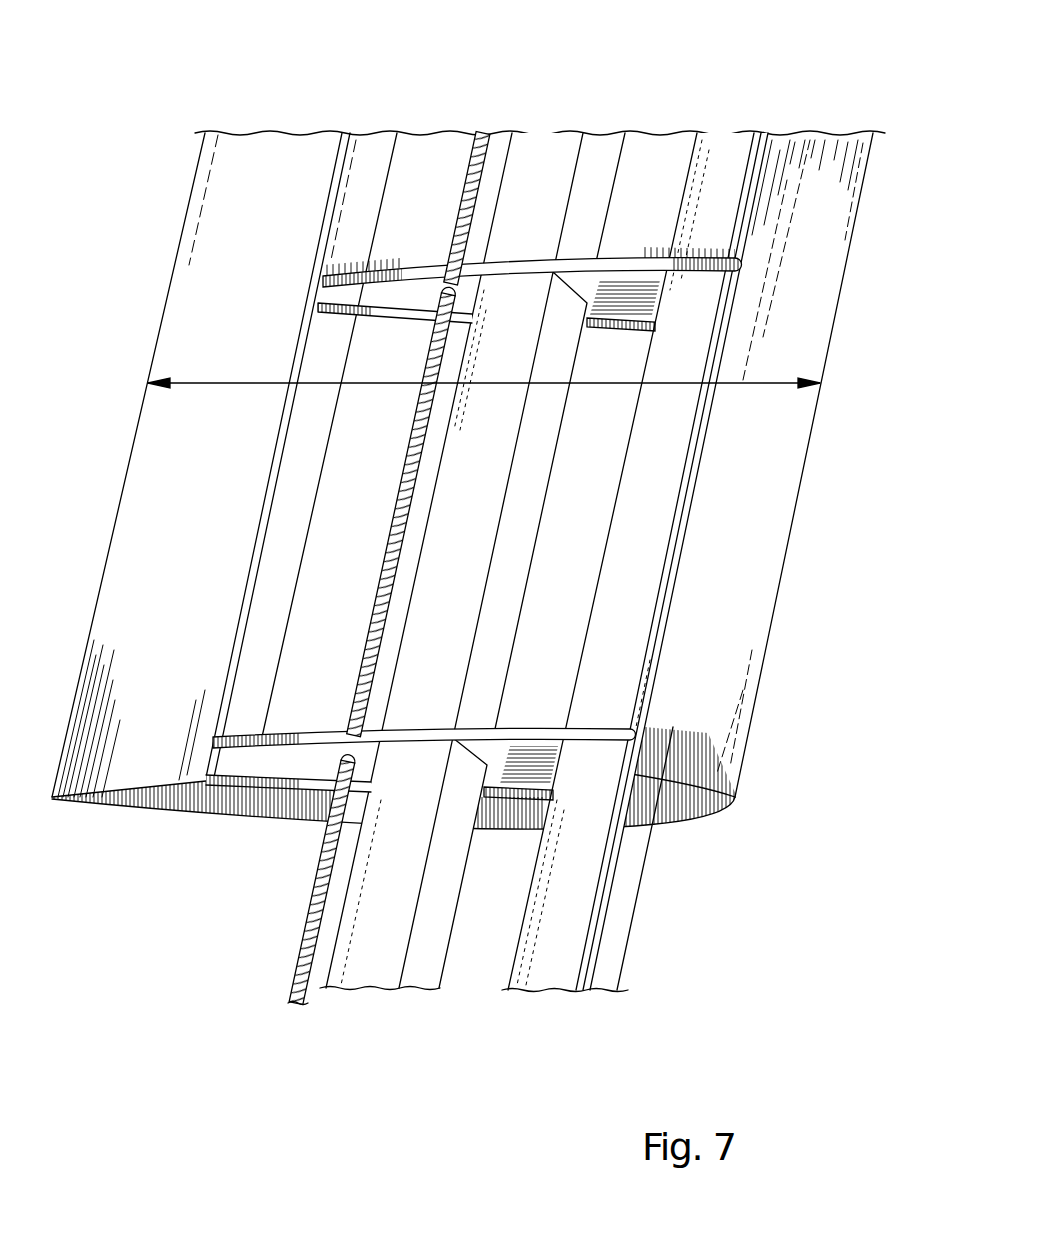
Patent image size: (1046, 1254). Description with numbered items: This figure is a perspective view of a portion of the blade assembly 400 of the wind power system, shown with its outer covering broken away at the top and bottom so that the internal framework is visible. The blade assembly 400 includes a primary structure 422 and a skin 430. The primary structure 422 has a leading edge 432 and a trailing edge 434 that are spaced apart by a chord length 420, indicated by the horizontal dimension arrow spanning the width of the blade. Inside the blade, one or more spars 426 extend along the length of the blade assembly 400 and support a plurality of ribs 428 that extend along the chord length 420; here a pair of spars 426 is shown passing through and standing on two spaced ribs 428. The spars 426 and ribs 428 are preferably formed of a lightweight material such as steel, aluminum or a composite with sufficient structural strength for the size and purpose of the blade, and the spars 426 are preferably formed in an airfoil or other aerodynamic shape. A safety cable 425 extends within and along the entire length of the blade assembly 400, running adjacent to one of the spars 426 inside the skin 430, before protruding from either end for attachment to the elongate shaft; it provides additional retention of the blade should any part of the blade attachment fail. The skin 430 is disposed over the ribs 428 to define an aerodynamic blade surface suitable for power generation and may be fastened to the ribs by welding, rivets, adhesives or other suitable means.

The blade assembly 400 is at (177, 82).
The chord length 420 is at (222, 382).
The primary structure 422 is at (805, 467).
The safety cable 425 is at (307, 905).
The spar 426 is at (378, 957).
The rib 428 is at (436, 290).
The skin 430 is at (724, 601).
The leading edge 432 is at (792, 522).
The trailing edge 434 is at (122, 480).